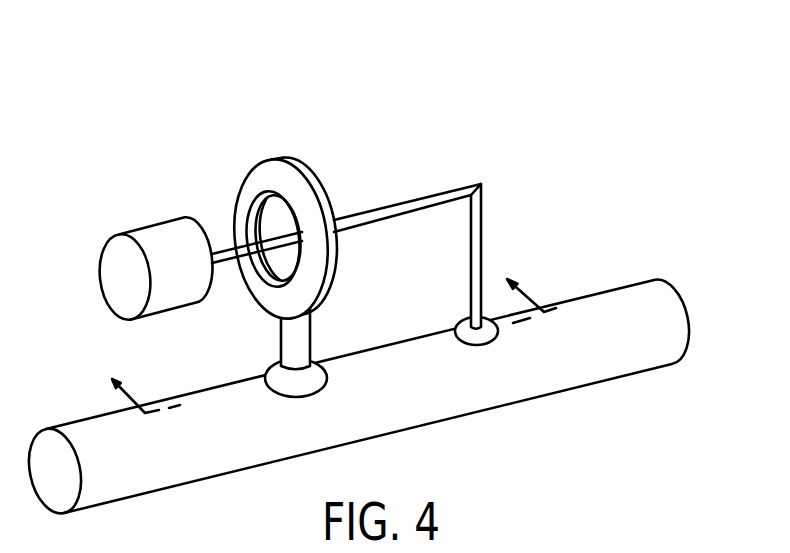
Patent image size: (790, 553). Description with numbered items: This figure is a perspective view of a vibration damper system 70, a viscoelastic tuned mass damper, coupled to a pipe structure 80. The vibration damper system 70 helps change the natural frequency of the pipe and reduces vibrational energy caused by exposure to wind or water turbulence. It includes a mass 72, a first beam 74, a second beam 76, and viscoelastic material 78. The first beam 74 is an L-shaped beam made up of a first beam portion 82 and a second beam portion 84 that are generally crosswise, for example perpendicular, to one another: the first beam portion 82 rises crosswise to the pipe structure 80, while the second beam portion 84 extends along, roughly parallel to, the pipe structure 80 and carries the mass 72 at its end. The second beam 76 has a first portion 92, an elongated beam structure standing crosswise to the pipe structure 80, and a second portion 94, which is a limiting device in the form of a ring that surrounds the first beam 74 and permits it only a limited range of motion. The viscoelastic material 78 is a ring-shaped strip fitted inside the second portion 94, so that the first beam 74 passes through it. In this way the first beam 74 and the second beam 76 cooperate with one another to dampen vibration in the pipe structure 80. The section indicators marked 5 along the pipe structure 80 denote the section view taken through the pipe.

The vibration damper system 70 is at (355, 260).
The mass 72 is at (158, 233).
The first beam 74 is at (358, 235).
The second beam 76 is at (288, 252).
The viscoelastic material 78 is at (289, 199).
The pipe structure 80 is at (493, 393).
The first beam portion 82 is at (483, 227).
The second beam portion 84 is at (387, 205).
The first portion 92 is at (302, 333).
The second portion 94 is at (316, 215).
The section line of FIG. 5 is at (324, 334).